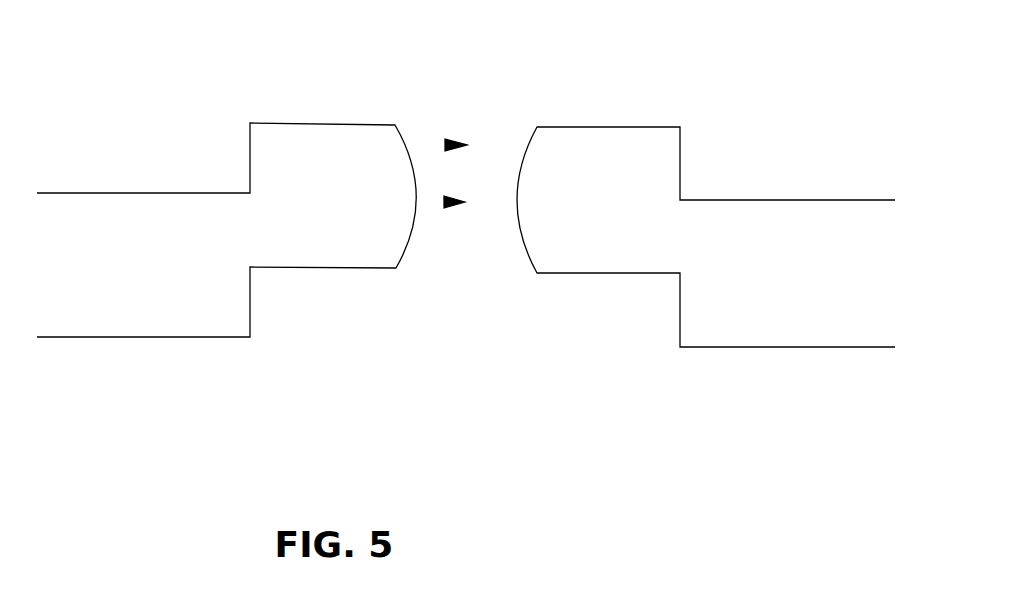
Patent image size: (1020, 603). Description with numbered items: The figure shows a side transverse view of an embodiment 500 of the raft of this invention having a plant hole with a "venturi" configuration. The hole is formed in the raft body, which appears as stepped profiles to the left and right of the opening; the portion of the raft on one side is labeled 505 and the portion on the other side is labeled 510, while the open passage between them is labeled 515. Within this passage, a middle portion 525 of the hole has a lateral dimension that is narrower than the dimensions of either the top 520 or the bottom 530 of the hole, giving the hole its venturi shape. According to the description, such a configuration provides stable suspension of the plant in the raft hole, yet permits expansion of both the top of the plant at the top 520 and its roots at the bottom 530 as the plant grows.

The embodiment 500 is at (615, 547).
The first optical fiber 505 is at (118, 324).
The second optical fiber 510 is at (799, 332).
The gap 515 is at (390, 113).
The top of the hole 520 is at (447, 145).
The middle portion 525 is at (446, 202).
The bottom of the hole 530 is at (449, 272).